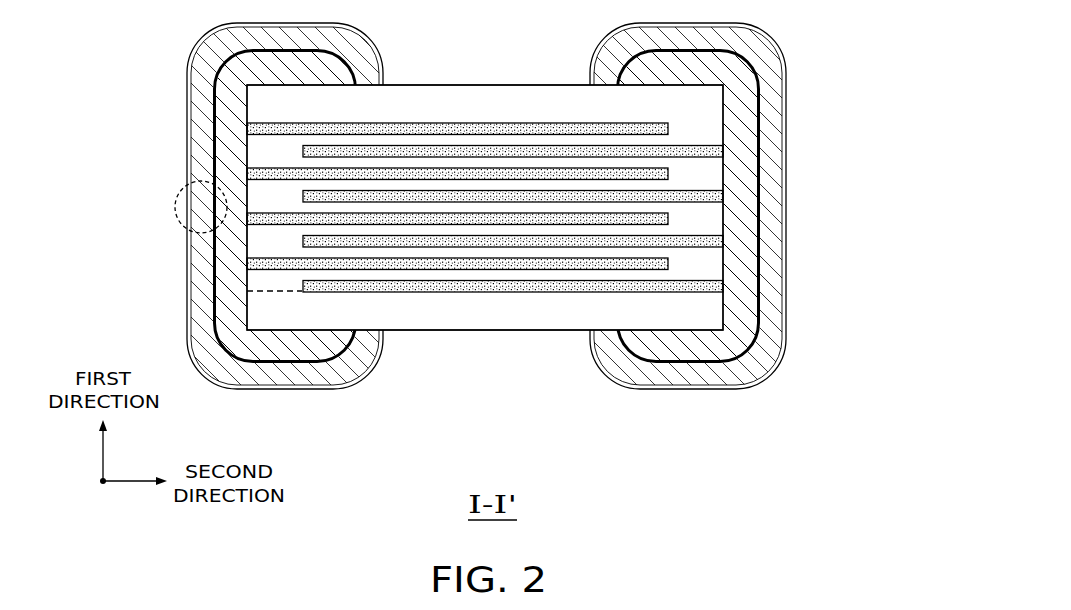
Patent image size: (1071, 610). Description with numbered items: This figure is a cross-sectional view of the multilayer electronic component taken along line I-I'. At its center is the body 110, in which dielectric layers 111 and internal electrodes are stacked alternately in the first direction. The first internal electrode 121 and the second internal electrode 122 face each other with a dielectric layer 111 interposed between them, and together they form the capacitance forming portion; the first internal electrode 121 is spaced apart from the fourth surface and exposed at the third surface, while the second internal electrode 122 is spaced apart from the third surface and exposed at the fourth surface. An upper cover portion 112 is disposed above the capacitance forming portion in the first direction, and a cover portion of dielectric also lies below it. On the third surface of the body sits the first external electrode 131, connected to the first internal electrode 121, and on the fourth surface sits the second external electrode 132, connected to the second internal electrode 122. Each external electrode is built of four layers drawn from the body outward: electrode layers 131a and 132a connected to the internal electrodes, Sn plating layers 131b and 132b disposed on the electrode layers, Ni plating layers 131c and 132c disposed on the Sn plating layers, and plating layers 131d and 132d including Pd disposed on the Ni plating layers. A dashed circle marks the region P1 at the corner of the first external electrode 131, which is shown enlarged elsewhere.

The body 110 is at (485, 199).
The dielectric layer 111 is at (403, 138).
The upper cover portion 112 is at (547, 105).
The first internal electrode 121 is at (500, 133).
The second internal electrode 122 is at (453, 138).
The first external electrode 131 is at (218, 206).
The electrode layer 131a is at (230, 243).
The Sn plating layer 131b is at (208, 272).
The Ni plating layer 131c is at (200, 302).
The plating layer including Pd 131d is at (187, 322).
The second external electrode 132 is at (756, 206).
The electrode layer 132a is at (742, 240).
The Sn plating layer 132b is at (760, 270).
The Ni plating layer 132c is at (773, 298).
The plating layer including Pd 132d is at (785, 323).
The region P1 is at (186, 193).